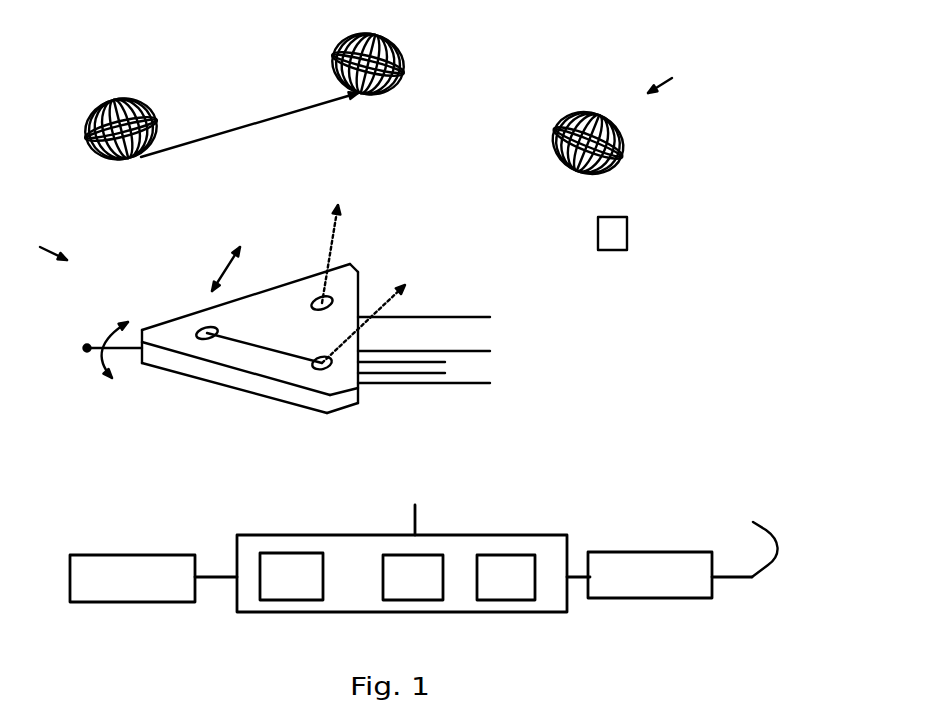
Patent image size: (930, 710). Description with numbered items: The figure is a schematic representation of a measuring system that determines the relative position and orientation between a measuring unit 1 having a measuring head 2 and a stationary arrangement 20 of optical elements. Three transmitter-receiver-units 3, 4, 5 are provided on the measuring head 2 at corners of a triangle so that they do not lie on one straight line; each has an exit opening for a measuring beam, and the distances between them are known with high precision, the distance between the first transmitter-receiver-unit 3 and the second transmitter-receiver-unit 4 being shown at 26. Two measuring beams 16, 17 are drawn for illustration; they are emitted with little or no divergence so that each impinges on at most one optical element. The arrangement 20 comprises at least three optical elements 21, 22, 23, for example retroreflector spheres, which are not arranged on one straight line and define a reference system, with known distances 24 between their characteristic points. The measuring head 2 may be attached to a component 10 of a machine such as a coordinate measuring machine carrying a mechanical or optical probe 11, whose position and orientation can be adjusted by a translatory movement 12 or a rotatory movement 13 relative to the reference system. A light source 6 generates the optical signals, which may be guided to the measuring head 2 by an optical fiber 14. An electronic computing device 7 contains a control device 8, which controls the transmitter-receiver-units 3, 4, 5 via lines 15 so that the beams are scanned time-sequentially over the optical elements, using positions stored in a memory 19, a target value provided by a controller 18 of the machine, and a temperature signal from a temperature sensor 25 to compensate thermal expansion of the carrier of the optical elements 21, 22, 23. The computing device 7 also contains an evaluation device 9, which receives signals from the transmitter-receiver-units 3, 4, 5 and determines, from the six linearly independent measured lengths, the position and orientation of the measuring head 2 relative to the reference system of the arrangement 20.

The measuring unit 1 is at (44, 247).
The measuring head 2 is at (230, 388).
The first transmitter-receiver-unit 3 is at (196, 328).
The second transmitter-receiver-unit 4 is at (318, 368).
The third transmitter-receiver-unit 5 is at (312, 299).
The light source 6 is at (627, 552).
The electronic computing device 7 is at (237, 537).
The control device 8 is at (262, 598).
The evaluation device 9 is at (385, 598).
The component 10 is at (450, 317).
The probe 11 is at (87, 352).
The translatory movement 12 is at (222, 277).
The rotatory movement 13 is at (108, 335).
The optical fiber 14 is at (387, 374).
The lines 15 is at (430, 363).
The measuring beam 16 is at (384, 304).
The measuring beam 17 is at (338, 228).
The controller 18 is at (70, 556).
The memory 19 is at (478, 598).
The arrangement of optical elements 20 is at (670, 72).
The optical element 21 is at (86, 120).
The optical element 22 is at (338, 42).
The optical element 23 is at (567, 115).
The distances 24 is at (255, 125).
The temperature sensor 25 is at (627, 232).
The distance 26 is at (254, 345).